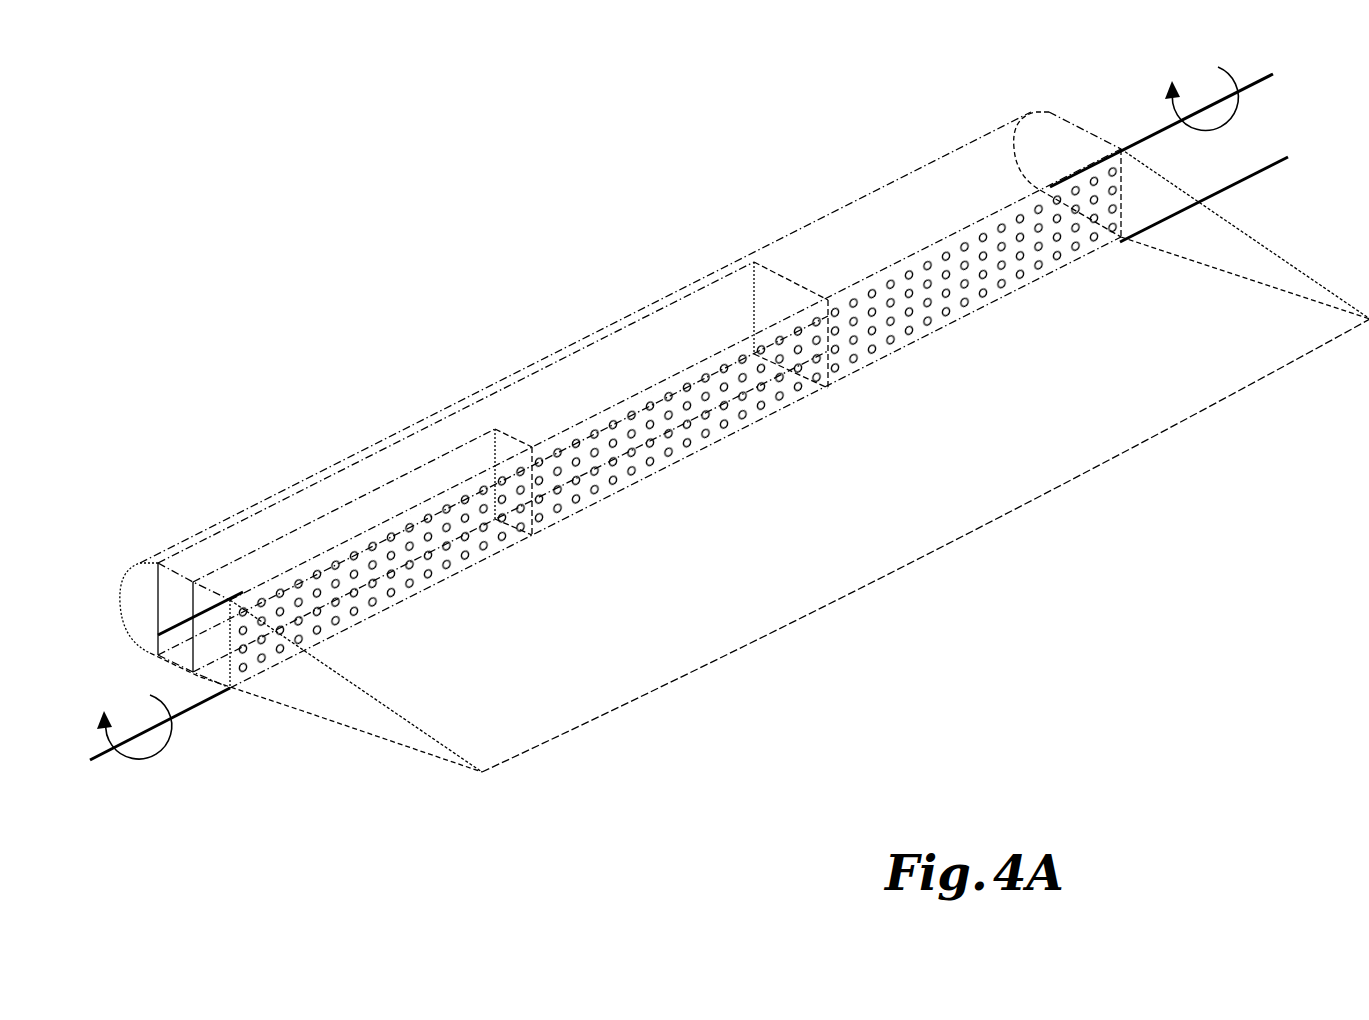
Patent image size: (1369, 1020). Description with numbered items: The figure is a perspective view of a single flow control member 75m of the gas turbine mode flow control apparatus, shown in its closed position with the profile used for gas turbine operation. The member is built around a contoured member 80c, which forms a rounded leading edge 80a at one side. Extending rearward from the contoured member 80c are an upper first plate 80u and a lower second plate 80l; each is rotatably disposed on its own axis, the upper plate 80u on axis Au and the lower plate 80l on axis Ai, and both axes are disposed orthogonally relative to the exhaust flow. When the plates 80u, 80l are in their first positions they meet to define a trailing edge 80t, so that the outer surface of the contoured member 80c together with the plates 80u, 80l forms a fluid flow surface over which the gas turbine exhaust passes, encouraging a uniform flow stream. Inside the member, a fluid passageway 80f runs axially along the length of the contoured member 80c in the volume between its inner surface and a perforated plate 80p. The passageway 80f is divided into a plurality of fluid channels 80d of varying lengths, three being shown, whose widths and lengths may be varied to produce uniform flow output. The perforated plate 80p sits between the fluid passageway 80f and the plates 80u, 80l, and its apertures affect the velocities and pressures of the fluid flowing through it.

The flow control member 75m is at (404, 265).
The leading edge 80a is at (120, 588).
The contoured member 80c is at (122, 650).
The fluid channels 80d is at (407, 487).
The fluid passageway 80f is at (852, 253).
The perforated plate 80p is at (703, 452).
The upper first plate 80u is at (1238, 228).
The lower second plate 80l is at (342, 732).
The trailing edge 80t is at (677, 676).
The axis of lower plate Ai is at (197, 708).
The axis of upper plate Au is at (1150, 137).